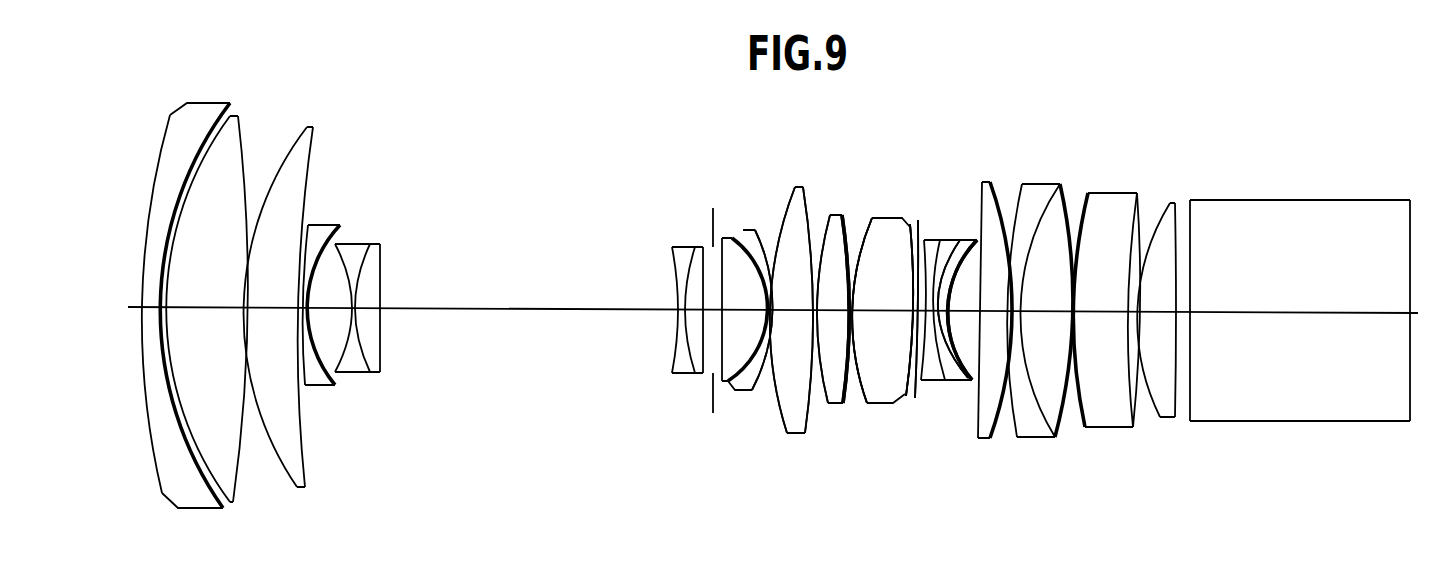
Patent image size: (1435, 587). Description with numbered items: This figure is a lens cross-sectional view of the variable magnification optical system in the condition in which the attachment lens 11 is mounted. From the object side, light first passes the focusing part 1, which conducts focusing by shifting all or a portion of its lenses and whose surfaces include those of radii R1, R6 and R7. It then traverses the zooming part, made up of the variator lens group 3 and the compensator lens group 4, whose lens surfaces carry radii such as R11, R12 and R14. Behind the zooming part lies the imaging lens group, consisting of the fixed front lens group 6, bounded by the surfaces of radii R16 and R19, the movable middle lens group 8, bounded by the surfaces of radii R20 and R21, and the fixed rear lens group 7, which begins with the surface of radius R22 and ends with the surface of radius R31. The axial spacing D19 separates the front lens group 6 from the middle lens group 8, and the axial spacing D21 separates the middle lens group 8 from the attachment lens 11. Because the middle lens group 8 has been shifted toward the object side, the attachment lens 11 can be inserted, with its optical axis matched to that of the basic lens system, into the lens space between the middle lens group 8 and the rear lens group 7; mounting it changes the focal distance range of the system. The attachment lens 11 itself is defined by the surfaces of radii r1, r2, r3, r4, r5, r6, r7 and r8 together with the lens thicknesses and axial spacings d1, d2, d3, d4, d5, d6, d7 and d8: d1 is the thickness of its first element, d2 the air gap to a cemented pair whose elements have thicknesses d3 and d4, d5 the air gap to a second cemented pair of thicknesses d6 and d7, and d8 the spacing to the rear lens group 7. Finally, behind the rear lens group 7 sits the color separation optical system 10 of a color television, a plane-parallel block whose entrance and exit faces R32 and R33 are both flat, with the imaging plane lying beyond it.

The focusing part 1 is at (328, 83).
The variator lens group 3 is at (388, 208).
The compensator lens group 4 is at (705, 212).
The fixed front lens group 6 is at (783, 167).
The fixed rear lens group 7 is at (1180, 150).
The movable middle lens group 8 is at (813, 158).
The color separation optical system 10 is at (1333, 203).
The attachment lens 11 is at (963, 150).
The radius of curvature of lens surface R1 is at (162, 492).
The radius of curvature of lens surface R6 is at (312, 480).
The radius of curvature of lens surface R7 is at (303, 387).
The radius of curvature of lens surface R11 is at (380, 362).
The radius of curvature of lens surface R12 is at (668, 371).
The radius of curvature of lens surface R14 is at (707, 373).
The radius of curvature of lens surface R16 is at (720, 382).
The radius of curvature of lens surface R19 is at (750, 390).
The radius of curvature of lens surface R20 is at (790, 435).
The radius of curvature of lens surface R21 is at (803, 435).
The radius of curvature of lens surface R22 is at (980, 440).
The radius of curvature of lens surface R31 is at (1172, 418).
The radius of curvature of lens surface R32 is at (1192, 422).
The radius of curvature of lens surface R33 is at (1405, 422).
The axial spacing D19 is at (773, 280).
The axial spacing D21 is at (820, 270).
The radius of curvature of attachment lens surface r1 is at (833, 405).
The radius of curvature of attachment lens surface r2 is at (847, 405).
The radius of curvature of attachment lens surface r3 is at (867, 403).
The radius of curvature of attachment lens surface r4 is at (895, 403).
The radius of curvature of attachment lens surface r5 is at (910, 398).
The radius of curvature of attachment lens surface r6 is at (917, 398).
The radius of curvature of attachment lens surface r7 is at (950, 382).
The radius of curvature of attachment lens surface r8 is at (965, 382).
The lens thickness d1 is at (845, 263).
The axial spacing d2 is at (855, 270).
The lens thickness d3 is at (883, 250).
The lens thickness d4 is at (882, 310).
The axial spacing d5 is at (915, 240).
The lens thickness d6 is at (936, 240).
The lens thickness d7 is at (952, 240).
The axial spacing d8 is at (957, 310).